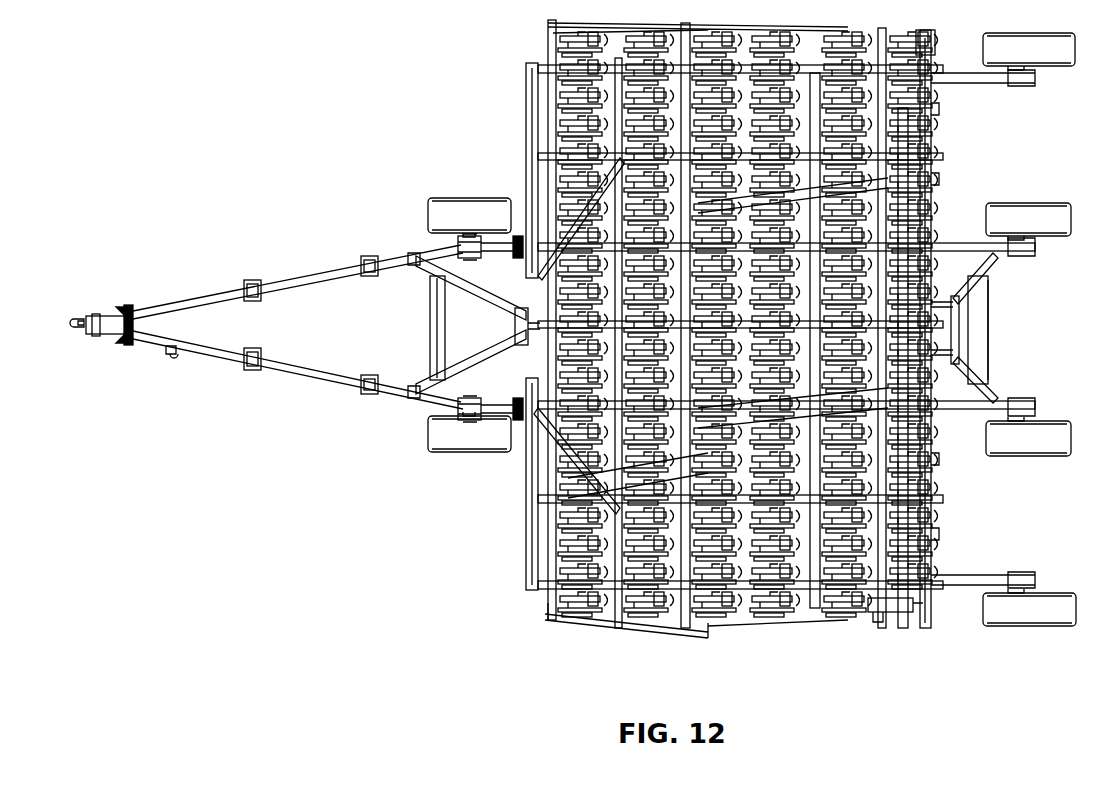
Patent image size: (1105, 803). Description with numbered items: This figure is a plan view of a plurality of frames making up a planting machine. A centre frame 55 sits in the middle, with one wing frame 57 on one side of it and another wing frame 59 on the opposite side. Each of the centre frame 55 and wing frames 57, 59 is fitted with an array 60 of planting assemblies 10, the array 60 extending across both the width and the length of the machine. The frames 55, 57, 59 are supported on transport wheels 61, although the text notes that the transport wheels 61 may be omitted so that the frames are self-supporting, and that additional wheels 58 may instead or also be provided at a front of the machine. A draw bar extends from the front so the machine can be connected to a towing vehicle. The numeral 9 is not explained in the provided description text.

The rear wheel 9 is at (1044, 448).
The planting assembly 10 is at (876, 604).
The centre frame 55 is at (536, 350).
The wing frame 57 is at (538, 532).
The additional wheel 58 is at (422, 202).
The wing frame 59 is at (549, 105).
The array of planting assemblies 60 is at (482, 485).
The transport wheel 61 is at (1046, 57).